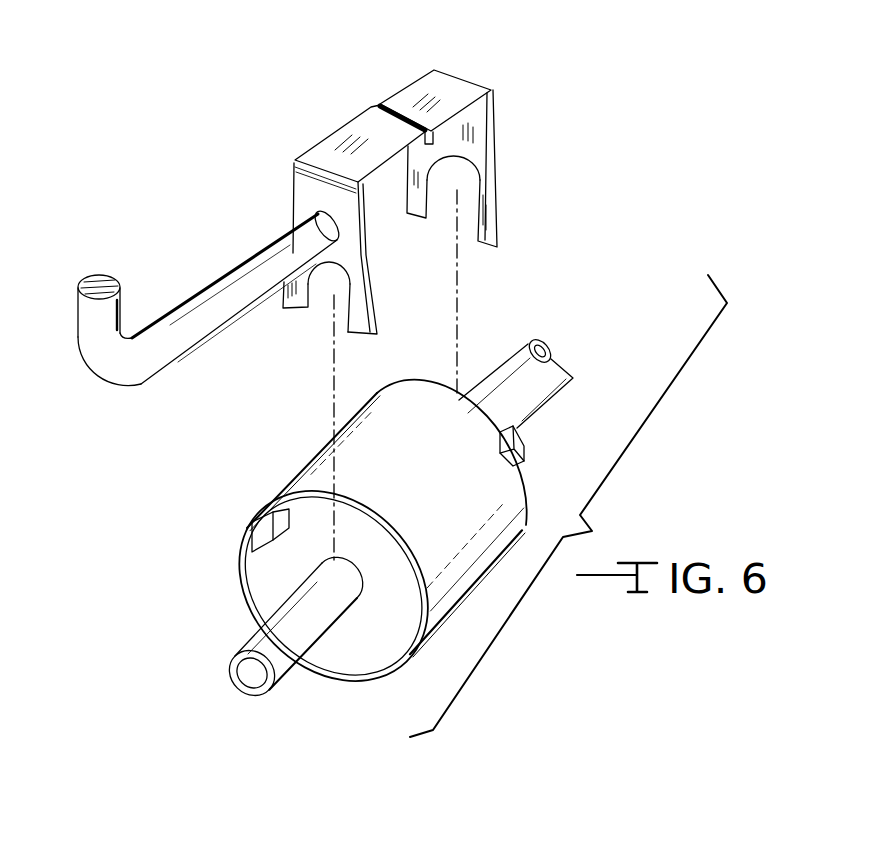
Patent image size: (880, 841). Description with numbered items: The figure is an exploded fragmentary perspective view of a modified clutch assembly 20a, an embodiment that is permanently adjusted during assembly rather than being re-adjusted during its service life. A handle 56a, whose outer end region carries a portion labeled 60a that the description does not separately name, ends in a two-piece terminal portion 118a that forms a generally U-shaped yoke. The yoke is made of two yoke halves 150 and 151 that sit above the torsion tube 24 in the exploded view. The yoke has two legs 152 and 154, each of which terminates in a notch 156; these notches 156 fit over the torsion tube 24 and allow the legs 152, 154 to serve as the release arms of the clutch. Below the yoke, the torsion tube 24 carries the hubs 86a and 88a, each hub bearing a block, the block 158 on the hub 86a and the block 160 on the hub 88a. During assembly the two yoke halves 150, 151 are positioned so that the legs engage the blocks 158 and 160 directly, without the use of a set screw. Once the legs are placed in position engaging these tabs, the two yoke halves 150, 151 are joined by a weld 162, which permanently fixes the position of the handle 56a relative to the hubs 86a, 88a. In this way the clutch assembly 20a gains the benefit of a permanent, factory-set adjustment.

The clutch assembly 20a is at (541, 594).
The torsion tube 24 is at (292, 676).
The handle 56a is at (211, 268).
The arm end 60a is at (217, 275).
The hub 86a is at (541, 374).
The hub 88a is at (395, 512).
The terminal portion 118a is at (333, 132).
The yoke half 150 is at (407, 191).
The yoke half 151 is at (308, 153).
The leg 152 is at (497, 207).
The leg 154 is at (378, 308).
The notches 156 is at (316, 300).
The block 158 is at (487, 420).
The block 160 is at (258, 531).
The weld 162 is at (400, 113).